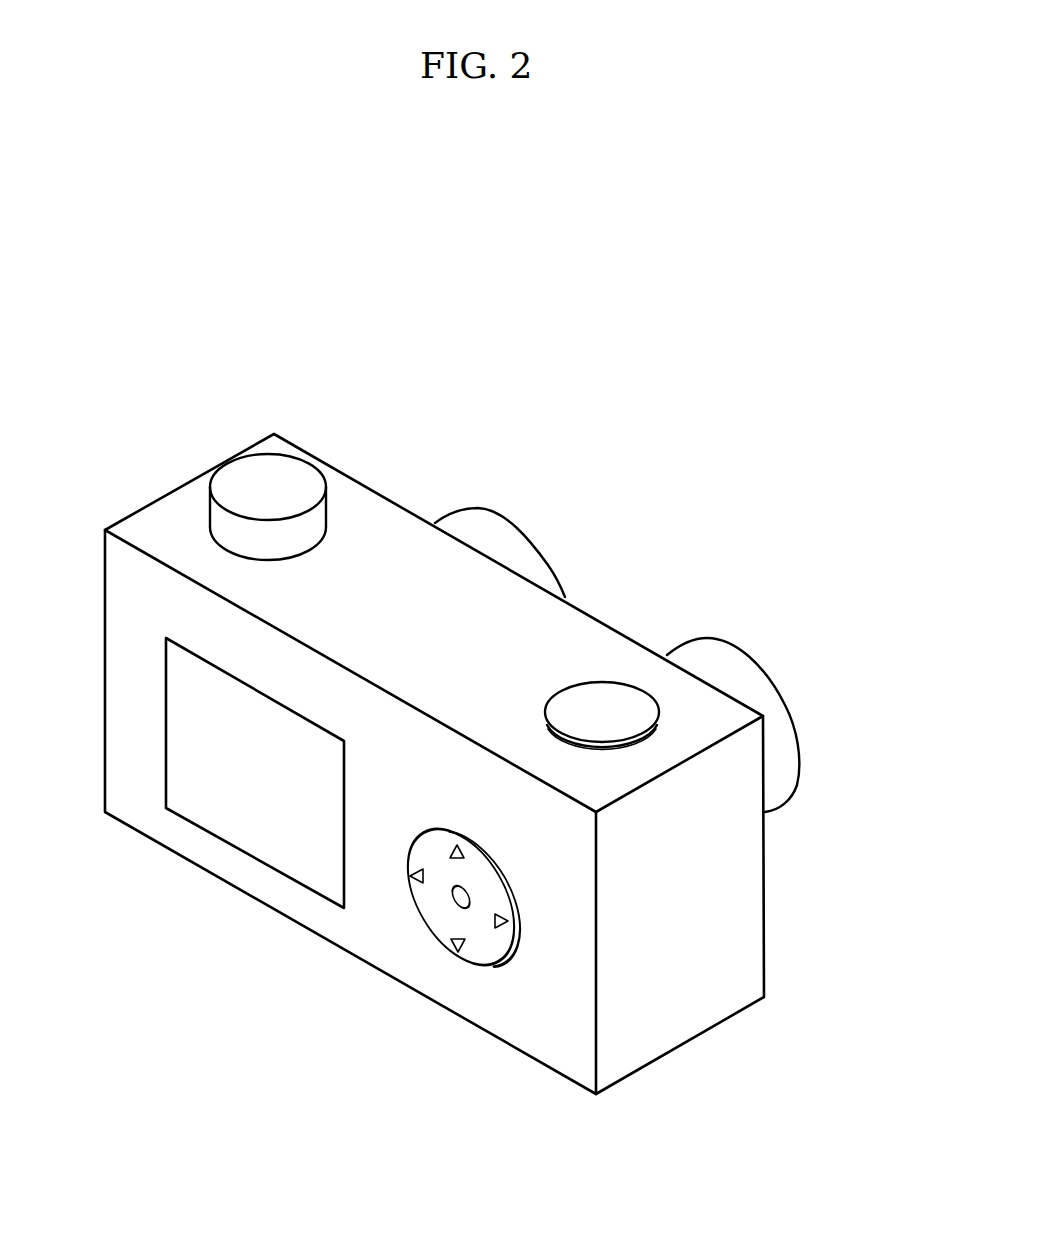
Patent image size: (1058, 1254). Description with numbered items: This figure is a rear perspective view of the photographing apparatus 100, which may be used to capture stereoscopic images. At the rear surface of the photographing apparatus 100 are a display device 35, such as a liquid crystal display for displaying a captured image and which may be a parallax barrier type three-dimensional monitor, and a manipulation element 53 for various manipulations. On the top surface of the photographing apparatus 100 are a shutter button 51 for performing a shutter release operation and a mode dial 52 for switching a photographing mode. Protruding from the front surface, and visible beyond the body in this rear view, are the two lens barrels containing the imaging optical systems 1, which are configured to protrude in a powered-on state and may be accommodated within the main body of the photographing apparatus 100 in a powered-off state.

The photographing apparatus 100 is at (126, 280).
The imaging optical system 1 is at (527, 505).
The display device 35 is at (254, 856).
The shutter button 51 is at (588, 681).
The mode dial 52 is at (295, 458).
The manipulation element 53 is at (458, 963).